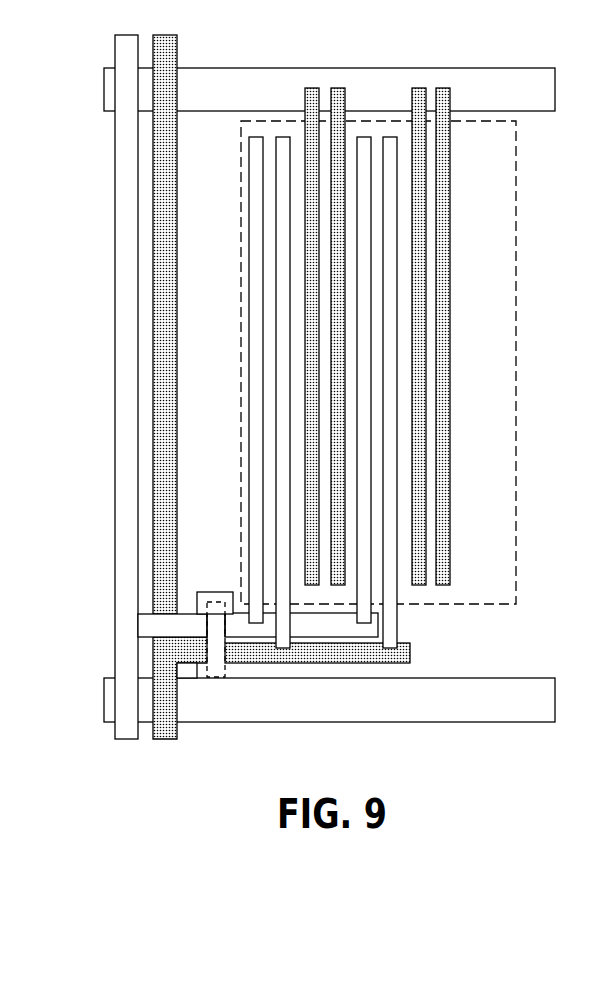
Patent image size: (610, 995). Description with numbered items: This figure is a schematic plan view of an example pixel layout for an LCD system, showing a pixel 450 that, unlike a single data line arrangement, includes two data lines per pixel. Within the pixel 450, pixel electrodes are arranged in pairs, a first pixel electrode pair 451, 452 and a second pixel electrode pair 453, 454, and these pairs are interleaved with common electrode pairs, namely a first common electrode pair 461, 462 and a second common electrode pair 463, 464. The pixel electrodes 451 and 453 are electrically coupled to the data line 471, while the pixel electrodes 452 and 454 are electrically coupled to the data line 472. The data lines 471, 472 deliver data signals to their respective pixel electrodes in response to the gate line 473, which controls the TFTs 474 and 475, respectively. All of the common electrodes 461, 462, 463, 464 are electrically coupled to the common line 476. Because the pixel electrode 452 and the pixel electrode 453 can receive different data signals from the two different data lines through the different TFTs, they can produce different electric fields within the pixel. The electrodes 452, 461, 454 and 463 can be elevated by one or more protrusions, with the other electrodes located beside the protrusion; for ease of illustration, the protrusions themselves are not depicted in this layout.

The pixel 450 is at (501, 591).
The pixel electrode 451 is at (249, 211).
The pixel electrode 452 is at (280, 299).
The pixel electrode 453 is at (364, 211).
The pixel electrode 454 is at (387, 297).
The common electrode 461 is at (305, 387).
The common electrode 462 is at (332, 472).
The common electrode 463 is at (418, 387).
The common electrode 464 is at (450, 472).
The data line 471 is at (137, 430).
The data line 472 is at (176, 523).
The gate line 473 is at (433, 677).
The TFT 474 is at (203, 602).
The TFT 475 is at (214, 677).
The common line 476 is at (332, 68).